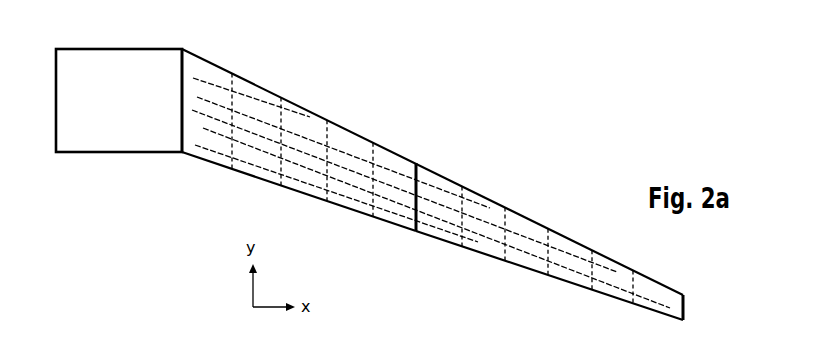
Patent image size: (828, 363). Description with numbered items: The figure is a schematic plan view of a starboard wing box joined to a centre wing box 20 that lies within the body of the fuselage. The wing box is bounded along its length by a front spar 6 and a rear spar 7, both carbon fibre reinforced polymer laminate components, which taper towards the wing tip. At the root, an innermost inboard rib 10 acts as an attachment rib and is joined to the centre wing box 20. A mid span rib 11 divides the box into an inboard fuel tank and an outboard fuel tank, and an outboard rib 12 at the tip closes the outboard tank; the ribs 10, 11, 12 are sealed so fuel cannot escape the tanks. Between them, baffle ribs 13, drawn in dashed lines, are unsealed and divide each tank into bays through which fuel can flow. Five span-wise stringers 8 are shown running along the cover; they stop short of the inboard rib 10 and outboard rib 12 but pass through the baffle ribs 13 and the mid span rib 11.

The centre wing box 20 is at (127, 68).
The inboard rib 10 is at (178, 118).
The front spar 6 is at (343, 128).
The rear spar 7 is at (350, 209).
The stringers 8 is at (432, 237).
The mid span rib 11 is at (420, 177).
The outboard rib 12 is at (690, 305).
The baffle ribs 13 is at (235, 103).